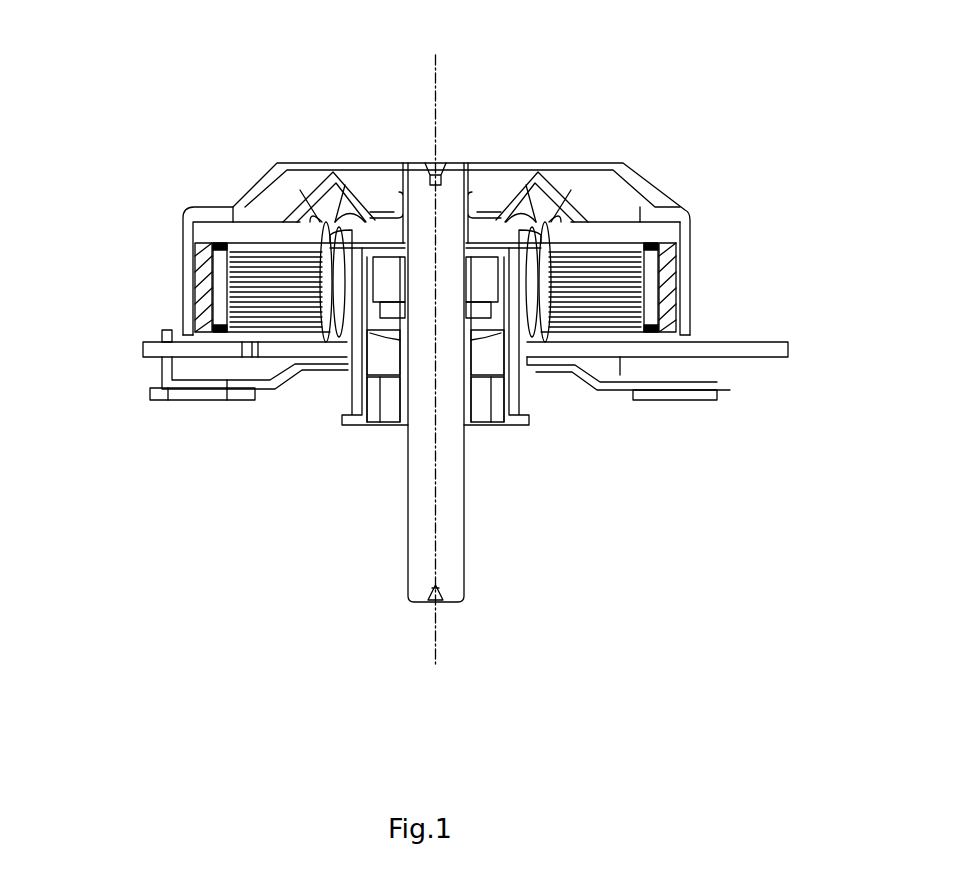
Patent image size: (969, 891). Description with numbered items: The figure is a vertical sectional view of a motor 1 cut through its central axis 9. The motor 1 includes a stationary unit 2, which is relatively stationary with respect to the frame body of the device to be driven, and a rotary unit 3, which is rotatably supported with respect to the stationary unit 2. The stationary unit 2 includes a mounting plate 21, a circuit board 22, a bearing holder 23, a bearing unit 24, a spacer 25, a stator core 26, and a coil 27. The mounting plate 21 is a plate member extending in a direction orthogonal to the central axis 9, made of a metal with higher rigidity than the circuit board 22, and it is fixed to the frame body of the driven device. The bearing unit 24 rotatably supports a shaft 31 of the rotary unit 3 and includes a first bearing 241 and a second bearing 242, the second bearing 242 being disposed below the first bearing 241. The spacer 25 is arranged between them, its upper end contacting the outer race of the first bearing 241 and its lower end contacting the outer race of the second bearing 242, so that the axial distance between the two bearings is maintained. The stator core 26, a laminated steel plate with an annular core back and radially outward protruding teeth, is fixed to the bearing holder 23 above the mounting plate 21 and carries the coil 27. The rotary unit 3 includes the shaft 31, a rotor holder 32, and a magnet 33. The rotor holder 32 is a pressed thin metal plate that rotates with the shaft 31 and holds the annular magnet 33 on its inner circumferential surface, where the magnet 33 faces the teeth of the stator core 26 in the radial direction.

The motor 1 is at (210, 138).
The stationary unit 2 is at (198, 419).
The rotary unit 3 is at (778, 211).
The central axis 9 is at (434, 100).
The mounting plate 21 is at (612, 385).
The circuit board 22 is at (762, 342).
The bearing holder 23 is at (355, 402).
The bearing unit 24 is at (378, 493).
The first bearing 241 is at (390, 272).
The second bearing 242 is at (387, 355).
The spacer 25 is at (500, 325).
The stator core 26 is at (237, 218).
The coil 27 is at (265, 258).
The shaft 31 is at (456, 552).
The rotor holder 32 is at (640, 215).
The magnet 33 is at (200, 285).